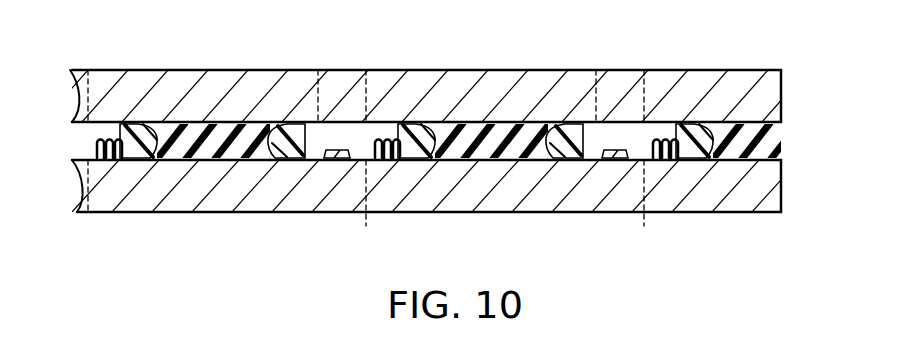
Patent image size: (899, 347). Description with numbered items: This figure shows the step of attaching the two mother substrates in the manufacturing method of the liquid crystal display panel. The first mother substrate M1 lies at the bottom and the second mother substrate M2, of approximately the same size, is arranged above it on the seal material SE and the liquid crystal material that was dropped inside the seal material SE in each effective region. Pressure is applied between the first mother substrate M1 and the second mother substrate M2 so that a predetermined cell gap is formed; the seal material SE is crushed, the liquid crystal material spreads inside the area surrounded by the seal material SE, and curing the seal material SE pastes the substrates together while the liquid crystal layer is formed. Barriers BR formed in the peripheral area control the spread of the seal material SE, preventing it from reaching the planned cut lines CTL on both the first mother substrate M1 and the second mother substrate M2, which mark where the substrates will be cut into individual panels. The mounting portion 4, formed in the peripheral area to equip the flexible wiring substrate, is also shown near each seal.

The first mother substrate M1 is at (783, 182).
The second mother substrate M2 is at (783, 93).
The planned cut line CTL is at (82, 192).
The barrier BR is at (124, 161).
The seal material SE is at (130, 161).
The mounting portion 4 is at (337, 161).